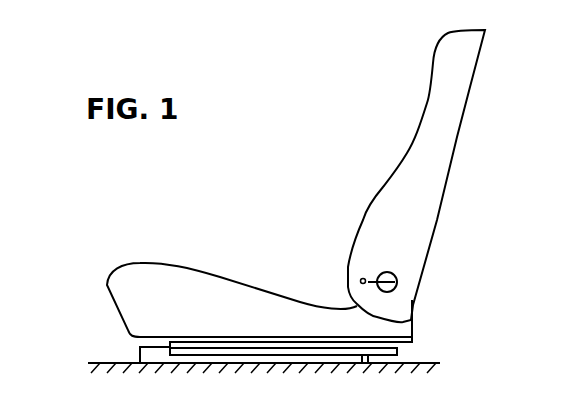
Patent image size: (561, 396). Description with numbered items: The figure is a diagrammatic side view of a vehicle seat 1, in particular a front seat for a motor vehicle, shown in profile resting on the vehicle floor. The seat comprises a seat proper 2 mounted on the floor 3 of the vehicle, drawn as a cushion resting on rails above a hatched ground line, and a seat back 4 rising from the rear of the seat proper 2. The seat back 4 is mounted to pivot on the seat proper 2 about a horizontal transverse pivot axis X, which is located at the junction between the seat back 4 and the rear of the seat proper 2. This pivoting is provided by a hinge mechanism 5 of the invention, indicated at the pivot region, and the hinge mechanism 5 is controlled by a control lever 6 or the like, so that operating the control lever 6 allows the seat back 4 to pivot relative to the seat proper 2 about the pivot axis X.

The vehicle seat 1 is at (345, 205).
The seat proper 2 is at (165, 280).
The floor 3 is at (102, 363).
The seat back 4 is at (452, 117).
The hinge mechanism 5 is at (404, 295).
The control lever 6 is at (361, 279).
The pivot axis X is at (397, 283).